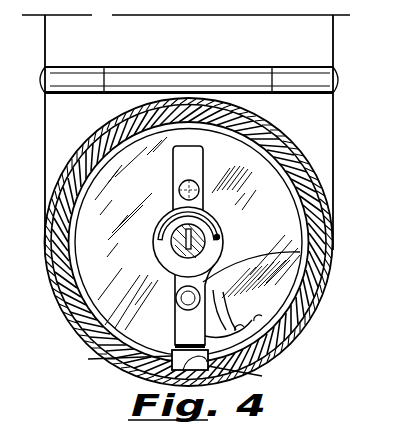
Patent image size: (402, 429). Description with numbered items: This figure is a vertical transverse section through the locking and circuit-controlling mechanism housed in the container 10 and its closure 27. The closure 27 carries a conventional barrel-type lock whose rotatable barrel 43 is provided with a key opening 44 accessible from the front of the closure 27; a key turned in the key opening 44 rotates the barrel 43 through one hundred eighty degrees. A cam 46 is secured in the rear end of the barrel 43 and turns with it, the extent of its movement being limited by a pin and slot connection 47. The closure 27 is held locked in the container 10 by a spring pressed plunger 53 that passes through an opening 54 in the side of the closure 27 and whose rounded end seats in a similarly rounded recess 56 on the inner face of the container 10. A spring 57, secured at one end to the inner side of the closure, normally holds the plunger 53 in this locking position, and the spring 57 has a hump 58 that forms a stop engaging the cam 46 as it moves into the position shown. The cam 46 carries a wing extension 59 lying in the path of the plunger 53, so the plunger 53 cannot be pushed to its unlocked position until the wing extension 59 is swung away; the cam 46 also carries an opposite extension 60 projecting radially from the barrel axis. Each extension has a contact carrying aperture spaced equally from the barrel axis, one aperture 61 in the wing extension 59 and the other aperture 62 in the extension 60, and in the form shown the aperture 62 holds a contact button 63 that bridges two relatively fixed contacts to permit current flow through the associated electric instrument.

The container 10 is at (286, 334).
The closure 27 is at (92, 316).
The rotatable barrel 43 is at (218, 250).
The key opening 44 is at (173, 252).
The cam 46 is at (177, 264).
The pin and slot connection 47 is at (220, 236).
The spring pressed plunger 53 is at (172, 367).
The opening 54 is at (245, 374).
The recess 56 is at (115, 361).
The spring 57 is at (228, 288).
The hump 58 is at (236, 300).
The wing extension 59 is at (180, 320).
The extension 60 is at (175, 170).
The aperture 61 is at (300, 252).
The aperture 62 is at (198, 184).
The contact button 63 is at (250, 122).